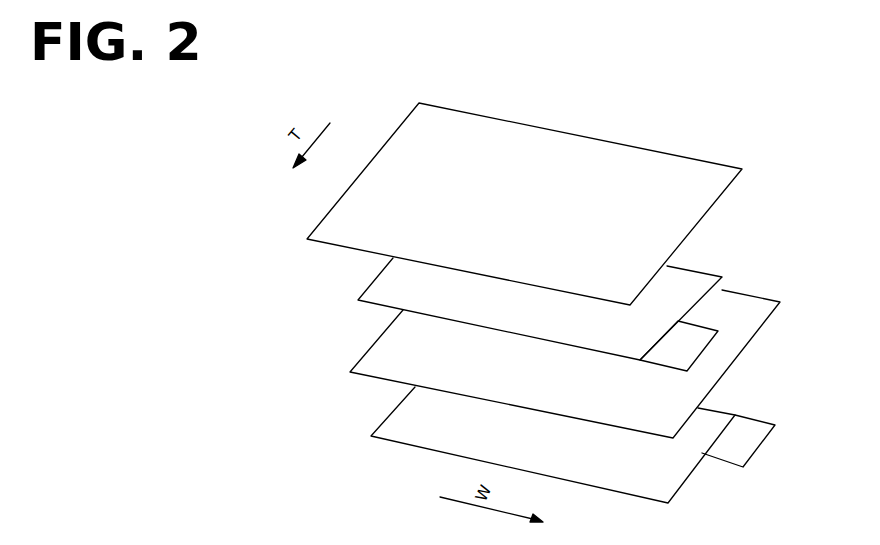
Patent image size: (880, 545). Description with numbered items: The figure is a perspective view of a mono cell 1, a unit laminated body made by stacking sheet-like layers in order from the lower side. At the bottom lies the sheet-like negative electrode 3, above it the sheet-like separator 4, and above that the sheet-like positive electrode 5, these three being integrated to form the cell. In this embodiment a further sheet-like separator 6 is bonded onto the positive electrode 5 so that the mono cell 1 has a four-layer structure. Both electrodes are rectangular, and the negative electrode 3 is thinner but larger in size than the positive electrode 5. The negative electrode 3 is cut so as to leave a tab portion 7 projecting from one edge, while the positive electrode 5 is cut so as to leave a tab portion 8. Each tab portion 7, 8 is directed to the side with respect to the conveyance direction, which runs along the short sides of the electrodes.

The mono cell 1 is at (259, 209).
The negative electrode 3 is at (403, 425).
The separator 4 is at (385, 363).
The positive electrode 5 is at (393, 288).
The separator 6 is at (340, 224).
The tab portion 7 is at (753, 439).
The tab portion 8 is at (692, 350).